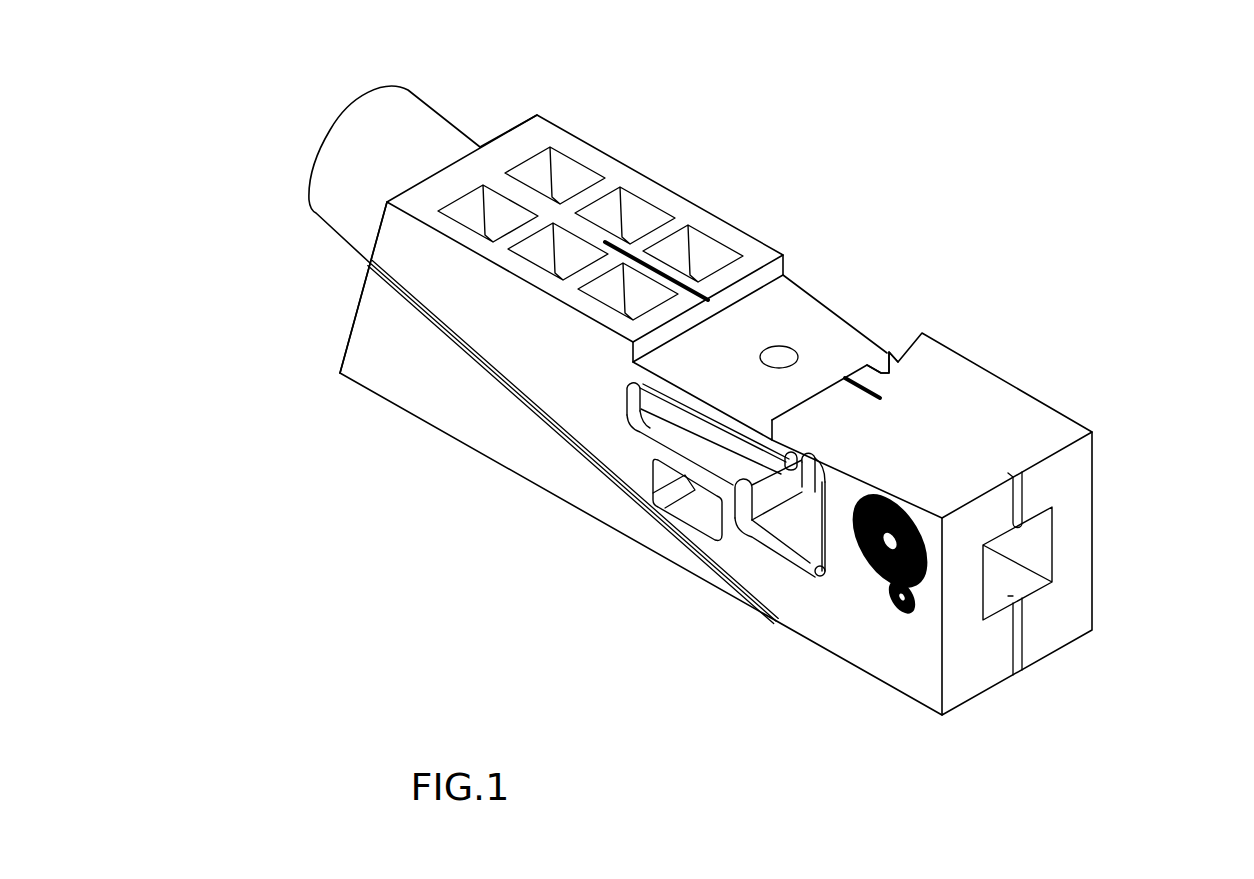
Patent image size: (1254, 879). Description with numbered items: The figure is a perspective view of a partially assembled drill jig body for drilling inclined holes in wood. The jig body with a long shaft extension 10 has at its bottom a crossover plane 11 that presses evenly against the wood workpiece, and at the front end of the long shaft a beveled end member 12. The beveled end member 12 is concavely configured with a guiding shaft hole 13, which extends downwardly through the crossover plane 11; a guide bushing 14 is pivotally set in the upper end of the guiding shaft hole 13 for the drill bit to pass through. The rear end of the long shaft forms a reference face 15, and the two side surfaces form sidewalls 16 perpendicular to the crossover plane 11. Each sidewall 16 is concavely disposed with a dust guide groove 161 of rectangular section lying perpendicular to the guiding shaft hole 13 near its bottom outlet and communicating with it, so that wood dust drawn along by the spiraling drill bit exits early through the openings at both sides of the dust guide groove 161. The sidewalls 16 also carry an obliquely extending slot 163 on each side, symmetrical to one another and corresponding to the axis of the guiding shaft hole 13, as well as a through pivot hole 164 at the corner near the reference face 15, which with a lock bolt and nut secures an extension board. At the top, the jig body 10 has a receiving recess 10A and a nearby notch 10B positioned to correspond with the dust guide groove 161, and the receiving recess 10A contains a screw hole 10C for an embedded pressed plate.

The jig body with a long shaft extension 10 is at (1050, 358).
The receiving recess 10A is at (840, 333).
The notch 10B is at (888, 353).
The screw hole 10C is at (783, 346).
The crossover plane 11 is at (1033, 667).
The beveled end member 12 is at (347, 305).
The guiding shaft hole 13 is at (480, 147).
The guide bushing 14 is at (412, 152).
The reference face 15 is at (1067, 560).
The sidewalls 16 is at (1095, 517).
The dust guide groove 161 is at (713, 510).
The obliquely extending slot 163 is at (522, 402).
The through pivot hole 164 is at (887, 548).